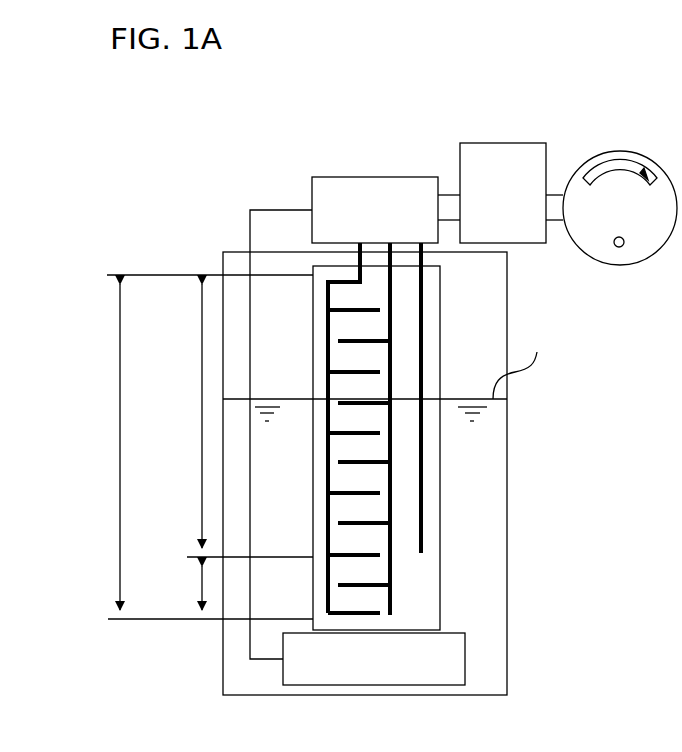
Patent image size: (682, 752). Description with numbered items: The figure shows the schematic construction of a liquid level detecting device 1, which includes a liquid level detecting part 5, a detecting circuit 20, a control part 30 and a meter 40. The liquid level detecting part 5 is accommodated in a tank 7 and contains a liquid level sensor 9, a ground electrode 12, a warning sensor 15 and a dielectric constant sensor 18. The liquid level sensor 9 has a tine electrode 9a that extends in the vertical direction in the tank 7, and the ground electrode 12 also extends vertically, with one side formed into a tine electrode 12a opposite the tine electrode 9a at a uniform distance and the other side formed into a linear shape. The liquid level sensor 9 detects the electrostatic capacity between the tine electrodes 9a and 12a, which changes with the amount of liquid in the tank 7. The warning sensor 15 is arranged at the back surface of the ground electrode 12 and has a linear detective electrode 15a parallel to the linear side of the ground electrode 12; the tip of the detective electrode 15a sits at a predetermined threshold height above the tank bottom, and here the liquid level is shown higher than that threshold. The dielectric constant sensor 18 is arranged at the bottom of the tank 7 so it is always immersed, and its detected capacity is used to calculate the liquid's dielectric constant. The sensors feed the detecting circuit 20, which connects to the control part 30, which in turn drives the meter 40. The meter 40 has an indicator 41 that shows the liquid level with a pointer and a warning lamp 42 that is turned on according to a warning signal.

The liquid level detecting device 1 is at (203, 182).
The liquid level detecting part 5 is at (440, 341).
The tank 7 is at (223, 637).
The liquid level sensor 9 is at (325, 428).
The tine electrode 9a is at (355, 555).
The ground electrode 12 is at (451, 438).
The tine electrode 12a is at (375, 580).
The warning sensor 15 is at (493, 398).
The detective electrode 15a is at (427, 527).
The dielectric constant sensor 18 is at (465, 662).
The detecting circuit 20 is at (370, 177).
The control part 30 is at (500, 143).
The meter 40 is at (622, 204).
The indicator 41 is at (596, 165).
The warning lamp 42 is at (620, 248).